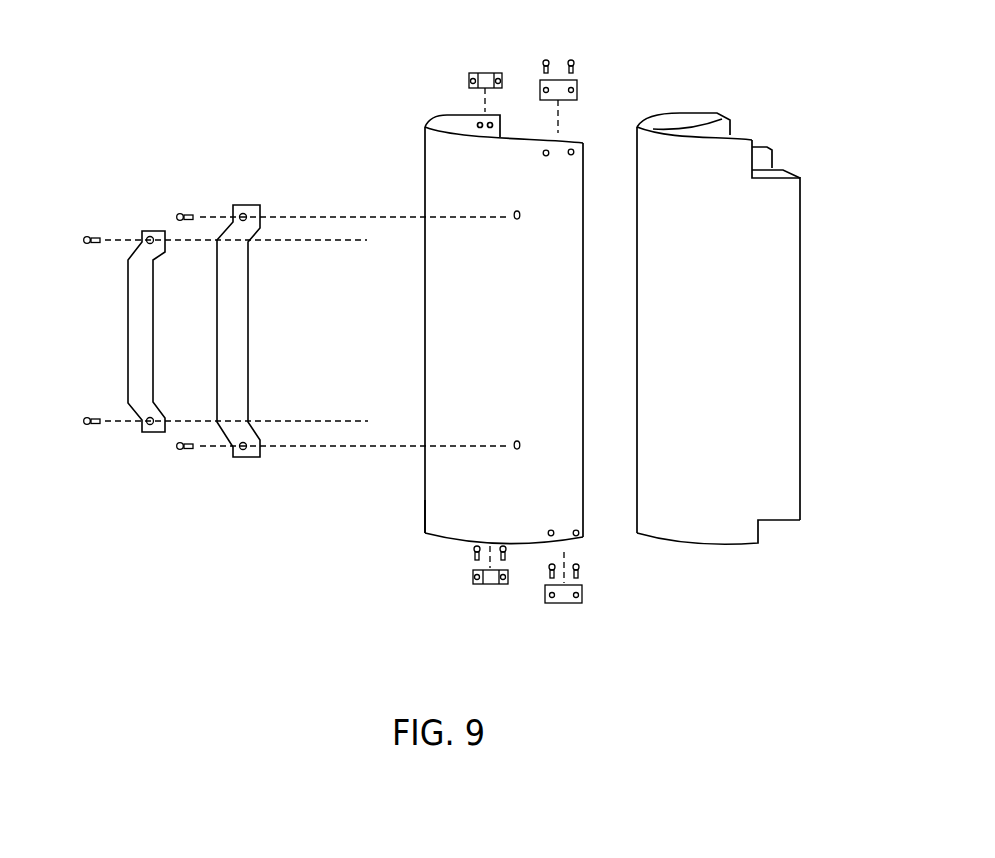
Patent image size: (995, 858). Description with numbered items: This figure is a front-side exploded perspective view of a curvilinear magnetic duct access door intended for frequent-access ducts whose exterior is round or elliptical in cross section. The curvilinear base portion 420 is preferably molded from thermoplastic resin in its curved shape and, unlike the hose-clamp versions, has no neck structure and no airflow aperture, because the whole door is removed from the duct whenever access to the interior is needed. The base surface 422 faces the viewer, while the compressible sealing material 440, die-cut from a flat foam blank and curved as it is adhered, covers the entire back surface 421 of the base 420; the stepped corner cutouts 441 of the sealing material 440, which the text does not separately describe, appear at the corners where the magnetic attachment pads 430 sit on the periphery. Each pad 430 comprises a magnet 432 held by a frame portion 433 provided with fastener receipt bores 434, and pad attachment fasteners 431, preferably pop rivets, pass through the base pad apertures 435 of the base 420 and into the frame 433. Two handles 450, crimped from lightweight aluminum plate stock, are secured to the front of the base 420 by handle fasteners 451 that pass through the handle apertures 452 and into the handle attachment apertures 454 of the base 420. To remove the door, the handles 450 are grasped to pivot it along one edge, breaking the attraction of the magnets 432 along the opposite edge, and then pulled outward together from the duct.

The curvilinear base portion 420 is at (432, 163).
The back surface 421 is at (427, 503).
The base surface 422 is at (452, 127).
The magnetic attachment pad 430 is at (562, 83).
The pad attachment fastener 431 is at (546, 60).
The magnet 432 is at (482, 73).
The frame portion 433 is at (498, 74).
The fastener receipt bore 434 is at (470, 81).
The base pad aperture 435 is at (571, 155).
The compressible sealing material 440 is at (777, 282).
The stepped notch / stop 441 is at (787, 160).
The handle 450 is at (217, 336).
The handle fastener 451 is at (85, 237).
The handle aperture 452 is at (149, 236).
The handle attachment aperture 454 is at (517, 219).